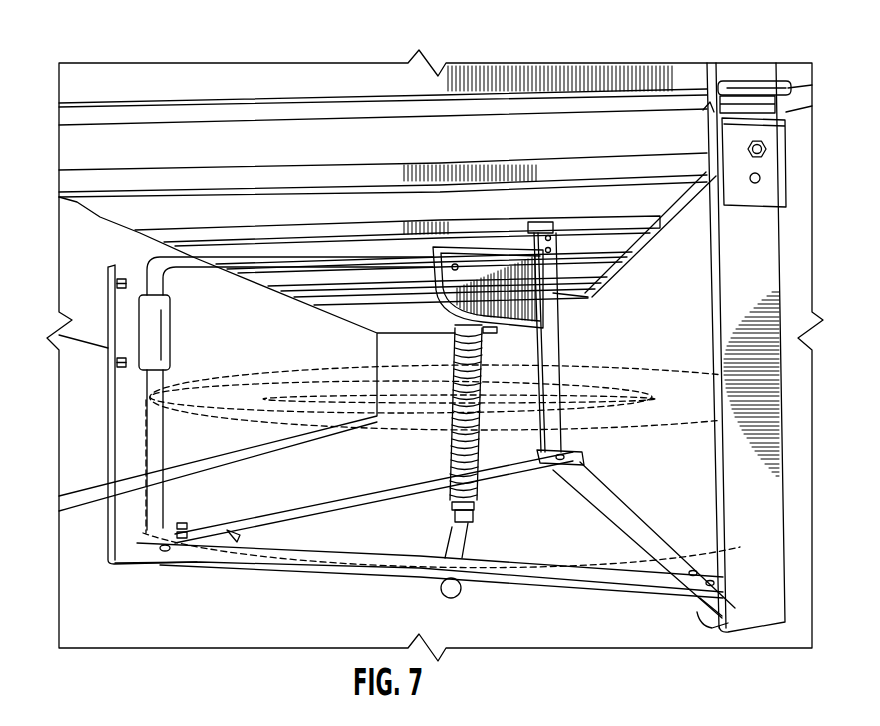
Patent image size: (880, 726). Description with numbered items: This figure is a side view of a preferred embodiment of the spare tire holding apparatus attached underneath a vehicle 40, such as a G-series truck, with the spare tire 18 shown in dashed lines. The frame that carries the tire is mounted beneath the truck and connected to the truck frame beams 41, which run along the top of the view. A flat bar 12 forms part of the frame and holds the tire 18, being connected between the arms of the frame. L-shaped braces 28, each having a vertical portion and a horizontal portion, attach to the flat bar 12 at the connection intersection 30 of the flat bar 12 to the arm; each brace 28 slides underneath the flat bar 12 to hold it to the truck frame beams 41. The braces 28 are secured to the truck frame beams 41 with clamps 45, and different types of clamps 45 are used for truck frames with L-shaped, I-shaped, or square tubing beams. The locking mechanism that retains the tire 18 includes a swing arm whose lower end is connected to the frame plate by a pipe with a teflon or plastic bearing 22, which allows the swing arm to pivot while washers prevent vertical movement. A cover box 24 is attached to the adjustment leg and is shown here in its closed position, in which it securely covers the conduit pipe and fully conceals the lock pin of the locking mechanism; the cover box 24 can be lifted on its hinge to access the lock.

The flat bar 12 is at (615, 520).
The spare tire 18 is at (243, 553).
The pipe with teflon or plastic bearing 22 is at (147, 357).
The cover box 24 is at (498, 248).
The brace 28 is at (780, 245).
The connection intersection 30 is at (707, 597).
The vehicle 40 is at (231, 84).
The truck frame beams 41 is at (90, 178).
The clamp 45 is at (793, 85).